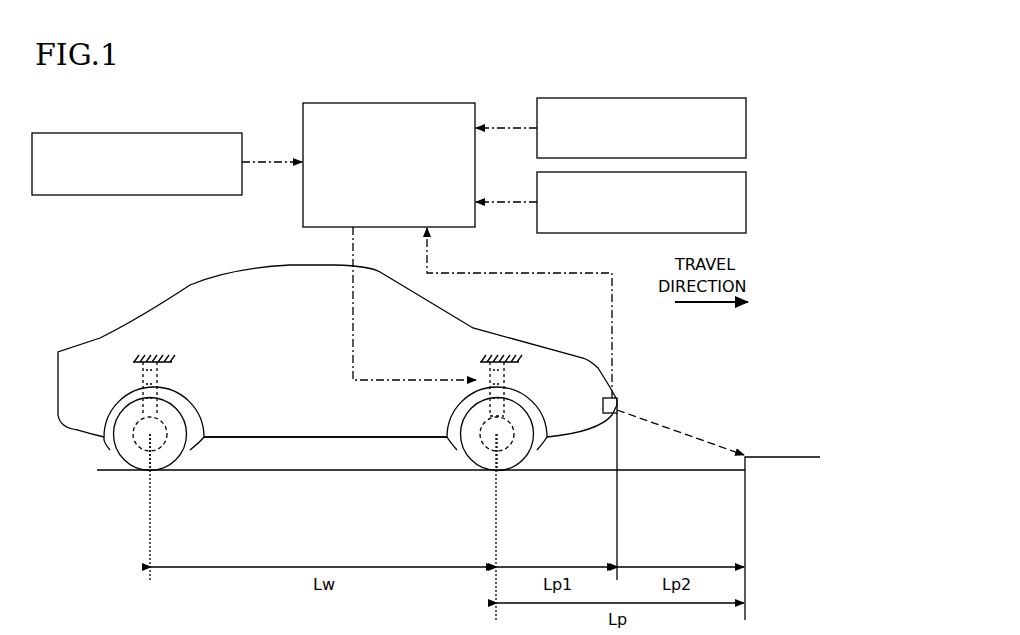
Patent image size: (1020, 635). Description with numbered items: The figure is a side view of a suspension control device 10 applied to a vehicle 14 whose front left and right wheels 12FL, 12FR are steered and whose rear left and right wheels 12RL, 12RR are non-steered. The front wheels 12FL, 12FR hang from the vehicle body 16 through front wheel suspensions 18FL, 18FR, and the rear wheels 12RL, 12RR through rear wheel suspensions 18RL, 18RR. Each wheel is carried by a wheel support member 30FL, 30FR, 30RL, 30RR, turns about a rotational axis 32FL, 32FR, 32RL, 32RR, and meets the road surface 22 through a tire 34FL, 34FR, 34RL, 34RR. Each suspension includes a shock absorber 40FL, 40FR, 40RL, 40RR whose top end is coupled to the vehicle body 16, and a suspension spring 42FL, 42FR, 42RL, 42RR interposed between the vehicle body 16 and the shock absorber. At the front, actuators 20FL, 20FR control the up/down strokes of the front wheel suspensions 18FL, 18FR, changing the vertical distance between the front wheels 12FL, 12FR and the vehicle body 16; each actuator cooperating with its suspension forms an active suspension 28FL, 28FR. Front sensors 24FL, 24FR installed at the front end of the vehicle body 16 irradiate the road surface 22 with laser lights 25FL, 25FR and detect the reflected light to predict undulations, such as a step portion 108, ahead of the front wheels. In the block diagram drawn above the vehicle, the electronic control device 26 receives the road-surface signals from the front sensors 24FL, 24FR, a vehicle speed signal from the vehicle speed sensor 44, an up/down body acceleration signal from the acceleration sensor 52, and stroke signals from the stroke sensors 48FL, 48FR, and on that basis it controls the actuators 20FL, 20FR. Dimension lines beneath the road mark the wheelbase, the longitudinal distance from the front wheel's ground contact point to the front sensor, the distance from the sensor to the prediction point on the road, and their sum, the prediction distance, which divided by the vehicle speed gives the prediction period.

The suspension control device 10 is at (428, 168).
The vehicle 14 is at (337, 331).
The vehicle body 16 is at (275, 268).
The vehicle speed sensor 44 is at (74, 197).
The electronic control device 26 is at (389, 165).
The acceleration sensor 52 is at (746, 125).
The stroke sensor 48FL is at (680, 202).
The stroke sensor 48FR is at (746, 202).
The rear left wheel 12RL is at (108, 457).
The rear right wheel 12RR is at (117, 457).
The front left wheel 12FL is at (531, 458).
The front right wheel 12FR is at (527, 452).
The rear wheel suspension 18RL is at (156, 359).
The rear wheel suspension 18RR is at (156, 359).
The front wheel suspension 18FL is at (493, 359).
The front wheel suspension 18FR is at (493, 359).
The shock absorber 40RL is at (106, 384).
The shock absorber 40RR is at (143, 377).
The shock absorber 40FL is at (446, 371).
The shock absorber 40FR is at (480, 372).
The suspension spring 42RL is at (194, 389).
The suspension spring 42RR is at (158, 380).
The suspension spring 42FL is at (538, 389).
The suspension spring 42FR is at (506, 378).
The actuator 20FL is at (444, 412).
The actuator 20FR is at (478, 413).
The active suspension 28FL is at (325, 451).
The active suspension 28FR is at (325, 451).
The wheel support member 30RL is at (169, 474).
The wheel support member 30RR is at (170, 462).
The wheel support member 30FL is at (476, 477).
The wheel support member 30FR is at (485, 452).
The rotational axis 32RL is at (121, 489).
The rotational axis 32RR is at (150, 440).
The rotational axis 32FL is at (523, 492).
The rotational axis 32FR is at (497, 440).
The tire 34RL is at (191, 478).
The tire 34RR is at (190, 449).
The tire 34FL is at (457, 479).
The tire 34FR is at (470, 455).
The front sensor 24FL is at (636, 373).
The front sensor 24FR is at (617, 402).
The laser light 25FL is at (680, 413).
The laser light 25FR is at (688, 432).
The road surface 22 is at (688, 470).
The step portion 108 is at (752, 462).